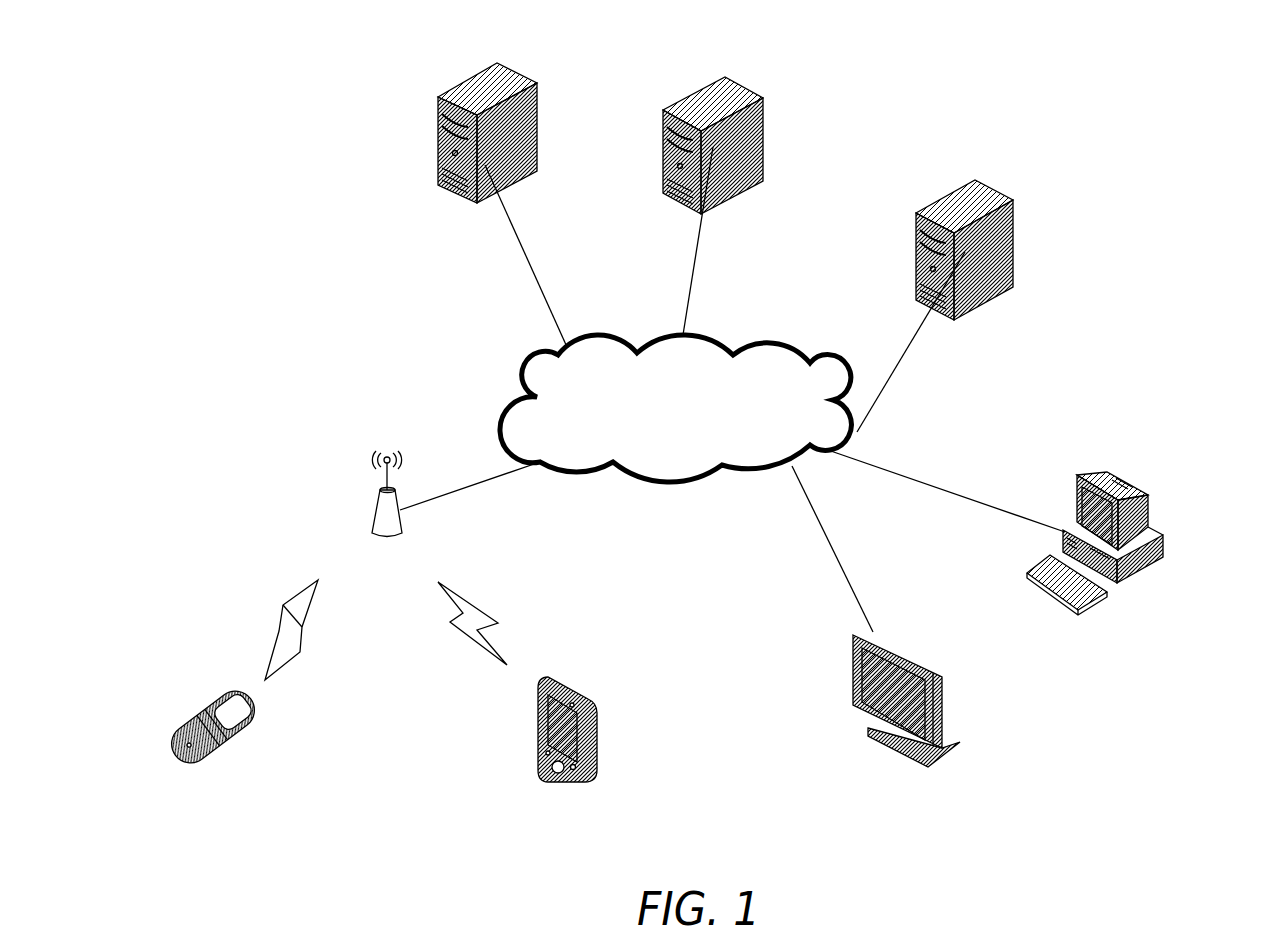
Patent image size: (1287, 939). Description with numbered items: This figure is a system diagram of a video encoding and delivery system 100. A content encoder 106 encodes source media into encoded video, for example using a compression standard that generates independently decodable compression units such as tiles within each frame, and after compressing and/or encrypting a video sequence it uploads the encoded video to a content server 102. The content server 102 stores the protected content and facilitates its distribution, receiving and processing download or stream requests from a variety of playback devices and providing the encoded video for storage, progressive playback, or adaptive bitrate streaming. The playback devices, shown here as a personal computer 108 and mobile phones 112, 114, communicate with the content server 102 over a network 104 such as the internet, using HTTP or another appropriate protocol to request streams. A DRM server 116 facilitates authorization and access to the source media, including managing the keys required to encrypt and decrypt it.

The system 100 is at (1148, 752).
The content server 102 is at (487, 133).
The network 104 is at (507, 407).
The content encoder 106 is at (747, 123).
The personal computer 108 is at (1128, 498).
The mobile phone 112 is at (567, 730).
The mobile phone 114 is at (205, 723).
The DRM server 116 is at (1000, 227).